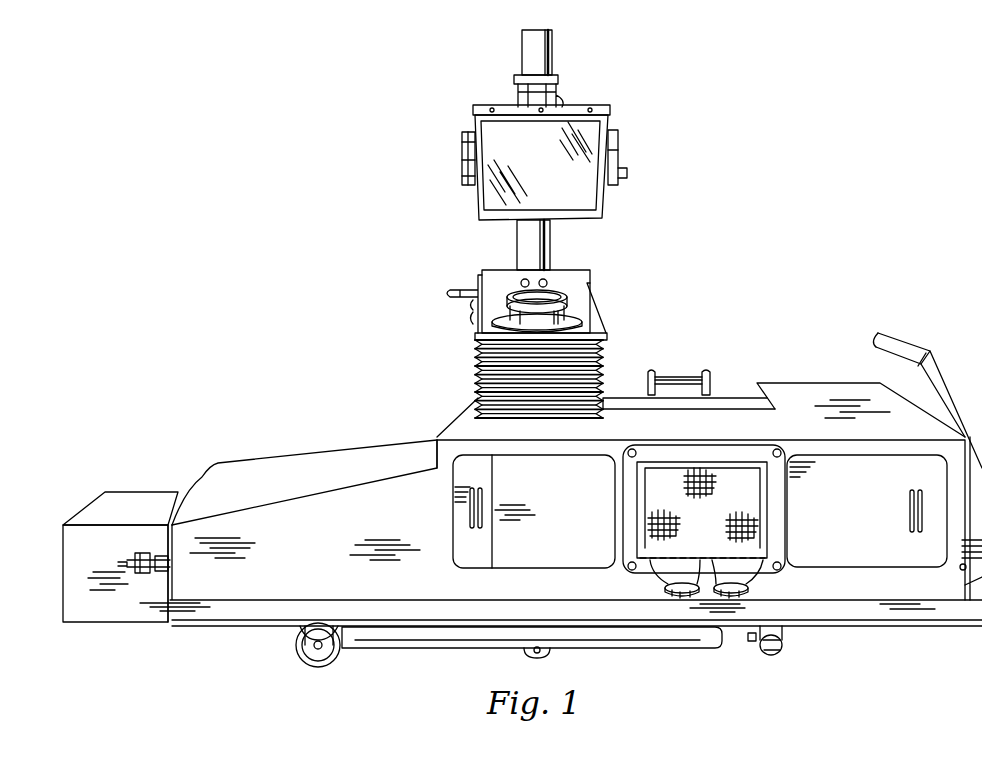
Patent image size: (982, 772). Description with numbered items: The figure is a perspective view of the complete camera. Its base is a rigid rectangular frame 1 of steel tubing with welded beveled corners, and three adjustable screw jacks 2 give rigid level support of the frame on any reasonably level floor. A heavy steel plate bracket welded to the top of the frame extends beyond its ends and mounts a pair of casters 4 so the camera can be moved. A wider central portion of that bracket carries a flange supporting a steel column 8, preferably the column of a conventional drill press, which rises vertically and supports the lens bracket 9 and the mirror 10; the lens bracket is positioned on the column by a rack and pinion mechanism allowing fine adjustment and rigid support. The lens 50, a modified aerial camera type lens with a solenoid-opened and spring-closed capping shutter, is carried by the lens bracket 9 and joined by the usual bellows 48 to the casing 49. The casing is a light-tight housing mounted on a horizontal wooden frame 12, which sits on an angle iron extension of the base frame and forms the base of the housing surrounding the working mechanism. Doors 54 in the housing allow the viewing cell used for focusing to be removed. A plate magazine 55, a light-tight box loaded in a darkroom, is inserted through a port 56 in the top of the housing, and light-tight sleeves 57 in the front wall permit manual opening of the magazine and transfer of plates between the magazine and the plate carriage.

The rigid rectangular frame 1 is at (413, 640).
The adjustable screw jacks 2 is at (530, 652).
The casters 4 is at (300, 645).
The steel column 8 is at (553, 54).
The lens bracket 9 is at (553, 266).
The mirror 10 is at (573, 200).
The horizontal wooden frame 12 is at (935, 605).
The bellows 48 is at (603, 365).
The casing 49 is at (270, 585).
The lens 50 is at (555, 298).
The doors 54 is at (700, 511).
The plate magazine 55 is at (733, 392).
The port 56 is at (773, 397).
The light-tight sleeves 57 is at (702, 575).